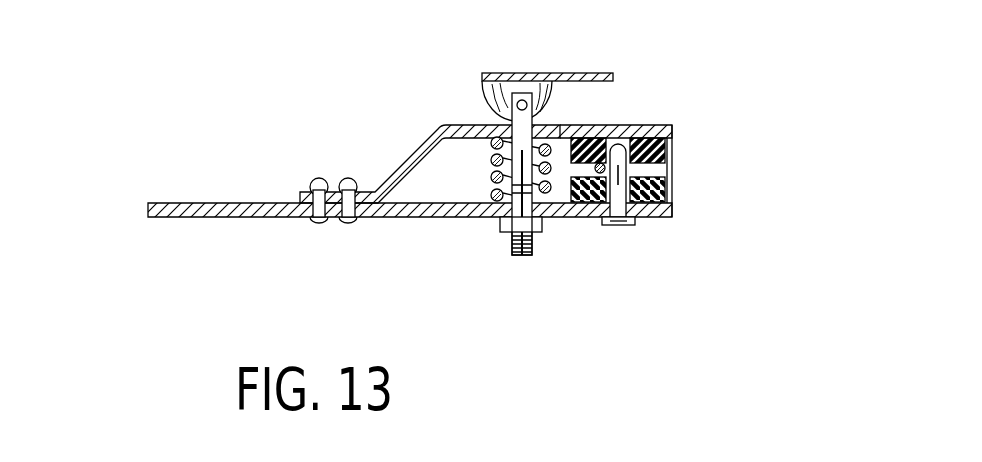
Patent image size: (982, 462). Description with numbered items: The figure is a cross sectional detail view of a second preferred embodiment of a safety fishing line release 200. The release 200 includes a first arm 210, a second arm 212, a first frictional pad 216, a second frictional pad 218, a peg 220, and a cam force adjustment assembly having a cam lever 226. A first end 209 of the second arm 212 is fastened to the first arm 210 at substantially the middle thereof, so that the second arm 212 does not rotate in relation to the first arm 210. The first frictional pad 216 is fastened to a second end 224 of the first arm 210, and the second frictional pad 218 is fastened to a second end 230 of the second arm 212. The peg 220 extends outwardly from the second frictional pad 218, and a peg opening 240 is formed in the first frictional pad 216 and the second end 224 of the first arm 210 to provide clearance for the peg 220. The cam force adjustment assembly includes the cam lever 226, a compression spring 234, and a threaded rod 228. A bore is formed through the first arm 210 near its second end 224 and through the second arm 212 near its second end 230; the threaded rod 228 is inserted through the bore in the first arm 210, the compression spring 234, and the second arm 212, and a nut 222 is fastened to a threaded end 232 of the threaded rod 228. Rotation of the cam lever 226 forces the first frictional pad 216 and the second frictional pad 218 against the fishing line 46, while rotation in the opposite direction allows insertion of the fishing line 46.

The safety fishing line release 200 is at (725, 273).
The first end 209 is at (305, 189).
The first arm 210 is at (418, 217).
The second arm 212 is at (405, 152).
The first frictional pad 216 is at (668, 163).
The second frictional pad 218 is at (670, 193).
The peg 220 is at (617, 127).
The nut 222 is at (543, 230).
The second end 224 is at (672, 127).
The cam lever 226 is at (548, 72).
The threaded rod 228 is at (520, 255).
The second end 230 is at (660, 217).
The threaded end 232 is at (533, 253).
The compression spring 234 is at (470, 215).
The peg opening 240 is at (620, 147).
The fishing line 46 is at (587, 217).